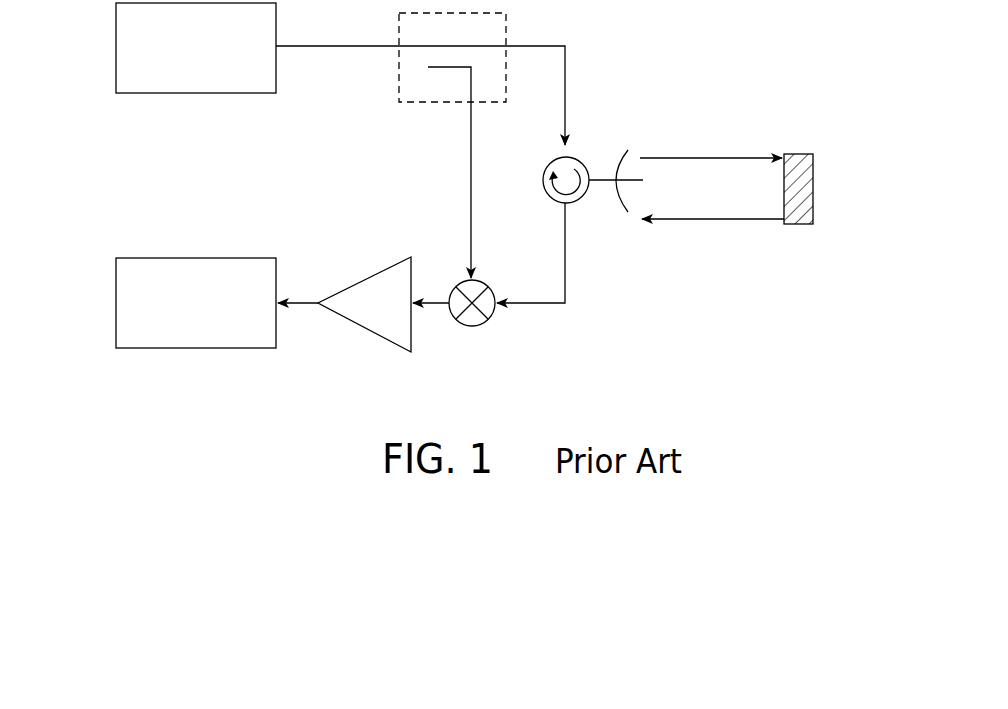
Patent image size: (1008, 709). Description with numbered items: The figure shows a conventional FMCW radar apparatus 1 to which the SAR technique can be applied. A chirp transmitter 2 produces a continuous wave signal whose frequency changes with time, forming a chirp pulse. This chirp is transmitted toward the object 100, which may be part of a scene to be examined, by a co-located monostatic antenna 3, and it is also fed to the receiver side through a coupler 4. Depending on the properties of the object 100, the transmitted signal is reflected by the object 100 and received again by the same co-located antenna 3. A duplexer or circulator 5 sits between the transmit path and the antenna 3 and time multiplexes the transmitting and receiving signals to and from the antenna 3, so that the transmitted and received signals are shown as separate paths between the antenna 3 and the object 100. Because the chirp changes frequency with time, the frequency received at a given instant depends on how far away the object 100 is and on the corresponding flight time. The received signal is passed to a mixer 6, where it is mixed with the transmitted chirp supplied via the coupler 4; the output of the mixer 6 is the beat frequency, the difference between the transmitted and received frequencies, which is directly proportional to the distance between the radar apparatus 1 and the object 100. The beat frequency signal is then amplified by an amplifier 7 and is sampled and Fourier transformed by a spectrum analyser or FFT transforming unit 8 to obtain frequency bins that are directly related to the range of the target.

The FMCW radar apparatus 1 is at (814, 116).
The chirp transmitter 2 is at (116, 48).
The co-located antenna 3 is at (642, 126).
The coupler 4 is at (508, 28).
The circulator 5 is at (580, 161).
The mixer 6 is at (476, 321).
The amplifier 7 is at (376, 334).
The spectrum analyser 8 is at (116, 303).
The object 100 is at (797, 225).